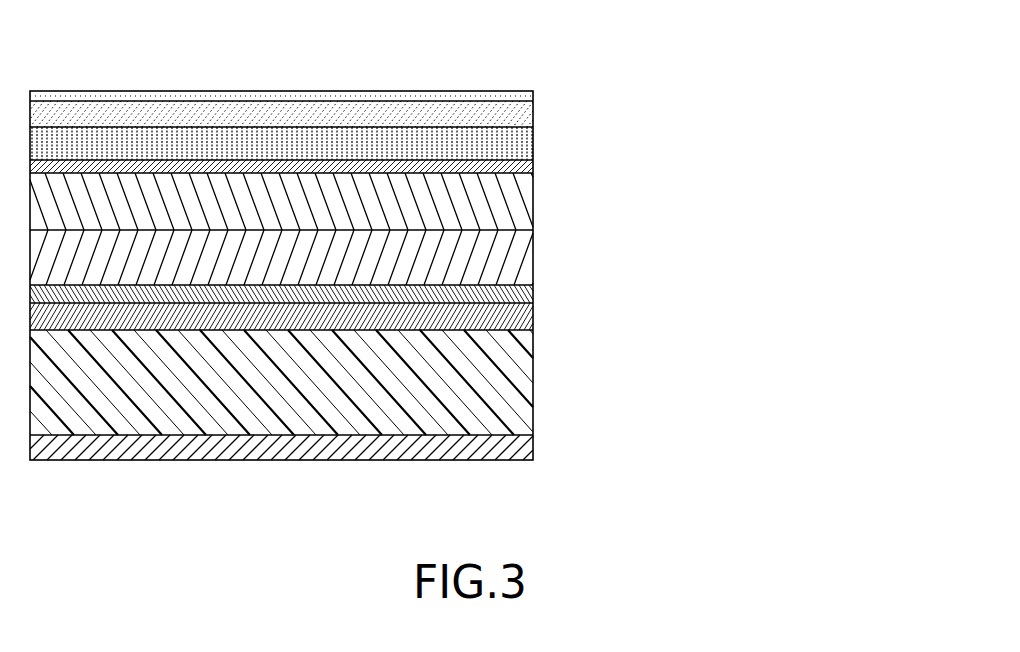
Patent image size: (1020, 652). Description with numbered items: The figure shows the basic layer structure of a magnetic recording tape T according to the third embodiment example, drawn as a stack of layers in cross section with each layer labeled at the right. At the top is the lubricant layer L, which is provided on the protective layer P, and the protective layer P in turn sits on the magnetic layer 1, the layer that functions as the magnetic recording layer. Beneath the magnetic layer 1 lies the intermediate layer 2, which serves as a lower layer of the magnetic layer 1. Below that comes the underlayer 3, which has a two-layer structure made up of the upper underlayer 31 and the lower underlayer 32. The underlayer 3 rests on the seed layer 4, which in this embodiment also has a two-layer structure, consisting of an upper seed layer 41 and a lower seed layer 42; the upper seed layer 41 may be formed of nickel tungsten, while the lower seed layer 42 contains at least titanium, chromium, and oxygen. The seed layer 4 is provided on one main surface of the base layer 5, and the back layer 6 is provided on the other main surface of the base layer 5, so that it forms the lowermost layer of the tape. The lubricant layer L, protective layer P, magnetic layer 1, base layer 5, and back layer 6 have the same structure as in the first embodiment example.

The magnetic recording tape T is at (531, 53).
The lubricant layer L is at (533, 97).
The protective layer P is at (520, 113).
The magnetic layer 1 is at (520, 145).
The intermediate layer 2 is at (533, 177).
The underlayer 3 is at (860, 223).
The upper underlayer 31 is at (533, 215).
The lower underlayer 32 is at (533, 258).
The seed layer 4 is at (860, 307).
The upper seed layer 41 is at (533, 300).
The lower seed layer 42 is at (533, 322).
The base layer 5 is at (533, 387).
The back layer 6 is at (527, 452).